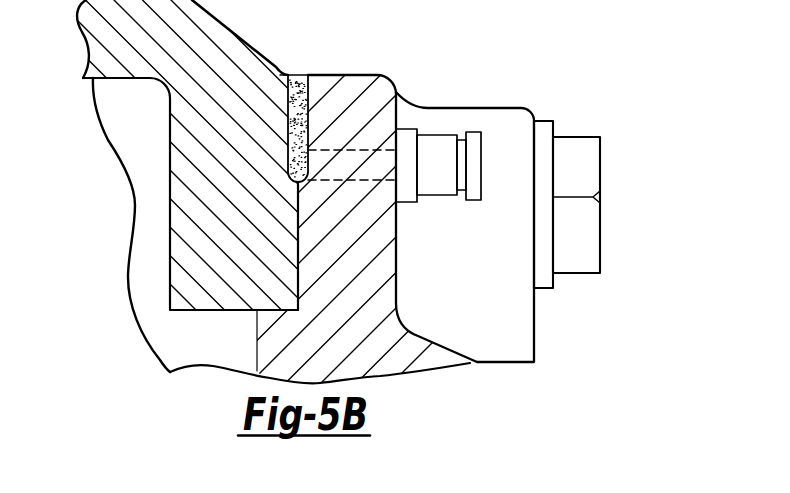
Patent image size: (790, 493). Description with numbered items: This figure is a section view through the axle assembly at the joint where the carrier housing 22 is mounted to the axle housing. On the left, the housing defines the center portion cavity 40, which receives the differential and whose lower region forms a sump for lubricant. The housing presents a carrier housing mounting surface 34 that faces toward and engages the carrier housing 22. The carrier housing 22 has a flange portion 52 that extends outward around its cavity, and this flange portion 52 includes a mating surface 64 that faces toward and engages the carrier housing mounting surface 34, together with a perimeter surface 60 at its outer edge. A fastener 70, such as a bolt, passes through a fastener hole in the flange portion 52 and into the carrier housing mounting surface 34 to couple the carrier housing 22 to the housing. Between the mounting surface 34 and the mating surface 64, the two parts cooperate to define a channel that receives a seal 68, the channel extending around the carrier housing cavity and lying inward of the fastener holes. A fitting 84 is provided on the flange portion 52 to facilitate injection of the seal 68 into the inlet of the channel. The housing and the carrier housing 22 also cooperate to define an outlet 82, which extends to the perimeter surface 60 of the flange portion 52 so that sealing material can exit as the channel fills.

The carrier housing 22 is at (537, 306).
The carrier housing mounting surface 34 is at (300, 212).
The center portion cavity 40 is at (155, 127).
The flange portion 52 is at (398, 252).
The perimeter surface 60 is at (377, 75).
The mating surface 64 is at (298, 250).
The seal 68 is at (292, 100).
The fastener 70 is at (578, 148).
The outlet 82 is at (298, 75).
The fitting 84 is at (442, 142).